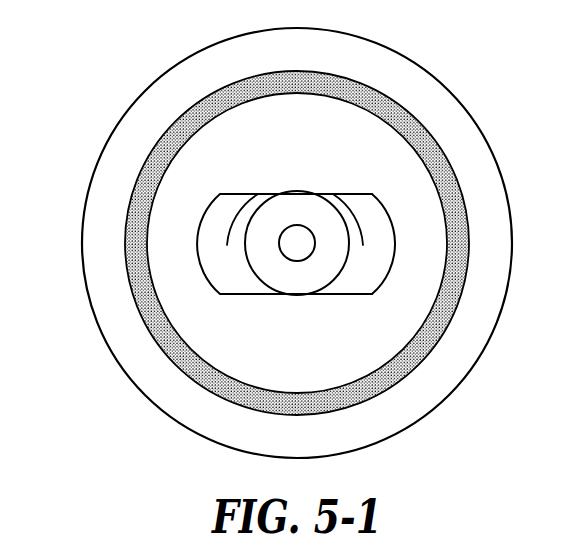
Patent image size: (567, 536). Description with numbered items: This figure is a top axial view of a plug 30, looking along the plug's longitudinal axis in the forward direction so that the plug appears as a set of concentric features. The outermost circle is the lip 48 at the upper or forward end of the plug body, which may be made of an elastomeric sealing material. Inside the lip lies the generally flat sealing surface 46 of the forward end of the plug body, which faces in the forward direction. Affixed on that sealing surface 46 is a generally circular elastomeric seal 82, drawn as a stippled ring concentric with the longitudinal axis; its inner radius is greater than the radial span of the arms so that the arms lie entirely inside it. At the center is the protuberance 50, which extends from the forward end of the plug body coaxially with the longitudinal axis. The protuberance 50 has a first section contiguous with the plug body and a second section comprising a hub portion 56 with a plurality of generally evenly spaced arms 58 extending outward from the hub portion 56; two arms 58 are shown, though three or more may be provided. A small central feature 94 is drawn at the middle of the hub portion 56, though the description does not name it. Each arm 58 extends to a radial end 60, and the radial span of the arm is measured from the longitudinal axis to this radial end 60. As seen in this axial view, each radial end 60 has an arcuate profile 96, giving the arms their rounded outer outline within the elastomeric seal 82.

The plug 30 is at (143, 70).
The lip 48 is at (452, 92).
The sealing surface 46 is at (457, 147).
The elastomeric seal 82 is at (140, 197).
The protuberance 50 is at (202, 198).
The arms 58 is at (333, 194).
The radial end 60 is at (395, 248).
The arcuate profile 96 is at (392, 270).
The hub portion 56 is at (297, 282).
The central bore 94 is at (290, 238).